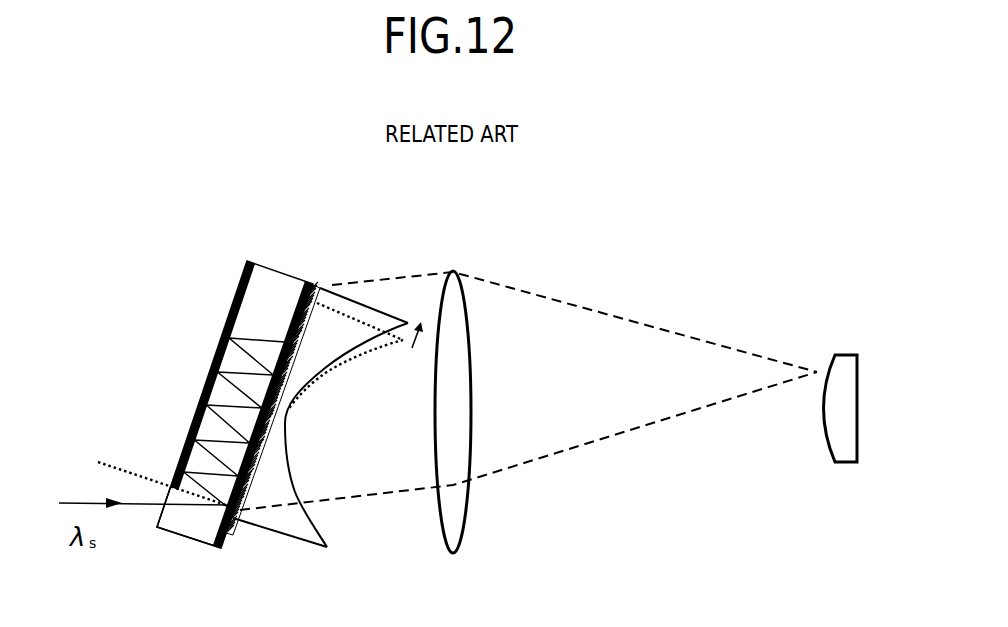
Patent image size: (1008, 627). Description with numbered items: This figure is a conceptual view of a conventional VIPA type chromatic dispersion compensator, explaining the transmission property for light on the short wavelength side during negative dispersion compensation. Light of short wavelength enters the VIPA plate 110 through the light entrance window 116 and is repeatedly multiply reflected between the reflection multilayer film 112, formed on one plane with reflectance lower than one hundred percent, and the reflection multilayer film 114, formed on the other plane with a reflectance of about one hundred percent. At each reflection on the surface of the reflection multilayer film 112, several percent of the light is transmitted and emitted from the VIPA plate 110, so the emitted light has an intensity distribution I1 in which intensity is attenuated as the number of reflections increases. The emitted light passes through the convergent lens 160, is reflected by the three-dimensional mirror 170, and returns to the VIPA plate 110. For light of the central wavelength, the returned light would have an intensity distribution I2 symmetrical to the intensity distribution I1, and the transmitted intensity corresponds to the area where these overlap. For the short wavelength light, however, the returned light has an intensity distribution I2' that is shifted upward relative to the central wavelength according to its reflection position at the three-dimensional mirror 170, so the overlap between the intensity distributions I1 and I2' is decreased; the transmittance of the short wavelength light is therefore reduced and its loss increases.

The VIPA plate 110 is at (287, 253).
The reflection multilayer film 112 is at (226, 548).
The reflection multilayer film 114 is at (241, 278).
The light entrance window 116 is at (158, 516).
The convergent lens 160 is at (455, 268).
The three-dimensional mirror 170 is at (840, 352).
The intensity distribution I1 is at (304, 492).
The intensity distribution I2 is at (346, 417).
The intensity distribution I2' is at (355, 356).